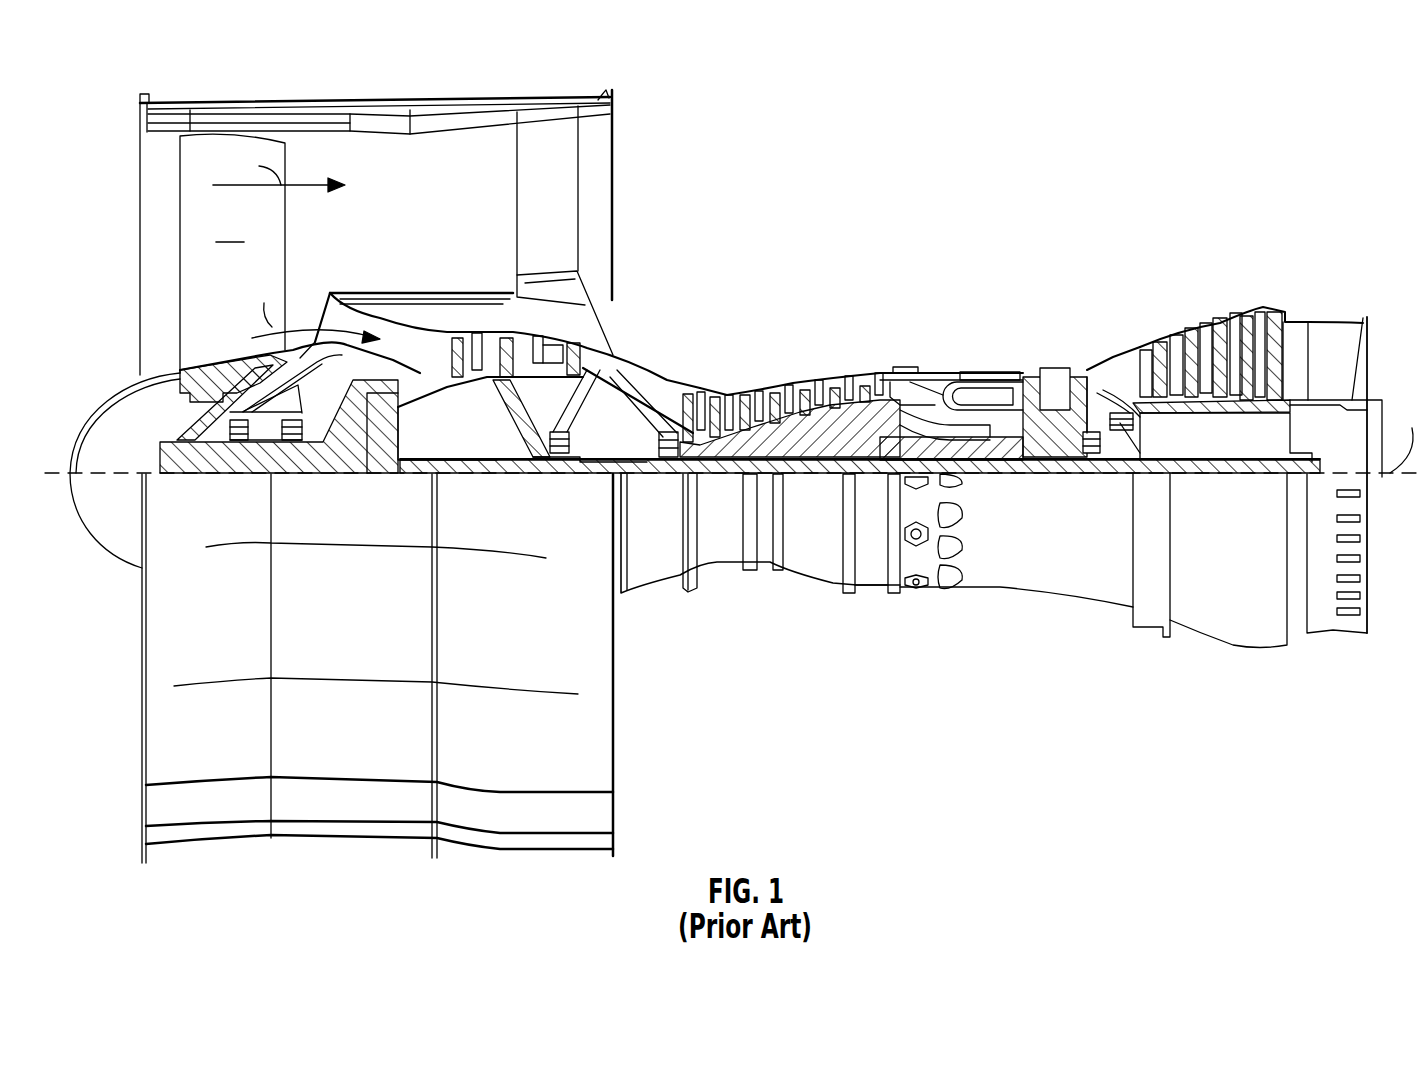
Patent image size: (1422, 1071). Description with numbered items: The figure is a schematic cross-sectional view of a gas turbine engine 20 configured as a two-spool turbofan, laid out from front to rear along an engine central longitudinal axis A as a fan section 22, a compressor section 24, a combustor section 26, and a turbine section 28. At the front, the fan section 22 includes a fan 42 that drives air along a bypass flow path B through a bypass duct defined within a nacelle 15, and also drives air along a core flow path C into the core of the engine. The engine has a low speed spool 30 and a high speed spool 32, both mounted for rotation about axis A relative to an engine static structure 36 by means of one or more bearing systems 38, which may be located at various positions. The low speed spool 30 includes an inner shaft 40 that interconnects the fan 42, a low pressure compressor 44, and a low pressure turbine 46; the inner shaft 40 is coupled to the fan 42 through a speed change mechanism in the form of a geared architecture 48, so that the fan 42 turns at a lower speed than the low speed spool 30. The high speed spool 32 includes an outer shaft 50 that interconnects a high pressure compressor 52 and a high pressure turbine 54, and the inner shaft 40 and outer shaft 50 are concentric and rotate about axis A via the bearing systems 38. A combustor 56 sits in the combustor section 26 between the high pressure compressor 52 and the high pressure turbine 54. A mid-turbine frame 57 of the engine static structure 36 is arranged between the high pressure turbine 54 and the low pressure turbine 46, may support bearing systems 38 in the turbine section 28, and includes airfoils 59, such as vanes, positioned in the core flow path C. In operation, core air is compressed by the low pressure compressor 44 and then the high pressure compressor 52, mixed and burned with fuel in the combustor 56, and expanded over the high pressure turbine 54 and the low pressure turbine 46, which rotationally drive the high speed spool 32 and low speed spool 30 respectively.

The nacelle 15 is at (386, 104).
The gas turbine engine 20 is at (1188, 143).
The fan section 22 is at (250, 96).
The compressor section 24 is at (680, 362).
The combustor section 26 is at (968, 325).
The turbine section 28 is at (1120, 308).
The low speed spool 30 is at (830, 478).
The high speed spool 32 is at (870, 430).
The engine static structure 36 is at (875, 595).
The bearing systems 38 is at (553, 474).
The inner shaft 40 is at (630, 476).
The fan 42 is at (341, 498).
The low pressure compressor 44 is at (515, 348).
The low pressure turbine 46 is at (1220, 332).
The geared architecture 48 is at (374, 474).
The outer shaft 50 is at (1000, 455).
The high pressure compressor 52 is at (775, 430).
The high pressure turbine 54 is at (1052, 376).
The combustor 56 is at (975, 393).
The mid-turbine frame 57 is at (1107, 357).
The airfoils 59 is at (1133, 420).